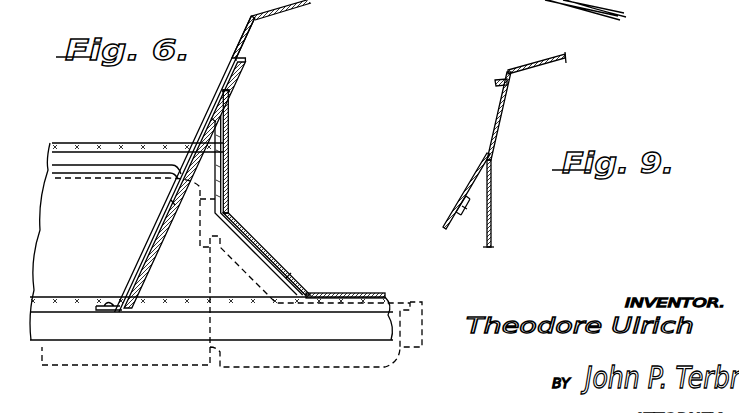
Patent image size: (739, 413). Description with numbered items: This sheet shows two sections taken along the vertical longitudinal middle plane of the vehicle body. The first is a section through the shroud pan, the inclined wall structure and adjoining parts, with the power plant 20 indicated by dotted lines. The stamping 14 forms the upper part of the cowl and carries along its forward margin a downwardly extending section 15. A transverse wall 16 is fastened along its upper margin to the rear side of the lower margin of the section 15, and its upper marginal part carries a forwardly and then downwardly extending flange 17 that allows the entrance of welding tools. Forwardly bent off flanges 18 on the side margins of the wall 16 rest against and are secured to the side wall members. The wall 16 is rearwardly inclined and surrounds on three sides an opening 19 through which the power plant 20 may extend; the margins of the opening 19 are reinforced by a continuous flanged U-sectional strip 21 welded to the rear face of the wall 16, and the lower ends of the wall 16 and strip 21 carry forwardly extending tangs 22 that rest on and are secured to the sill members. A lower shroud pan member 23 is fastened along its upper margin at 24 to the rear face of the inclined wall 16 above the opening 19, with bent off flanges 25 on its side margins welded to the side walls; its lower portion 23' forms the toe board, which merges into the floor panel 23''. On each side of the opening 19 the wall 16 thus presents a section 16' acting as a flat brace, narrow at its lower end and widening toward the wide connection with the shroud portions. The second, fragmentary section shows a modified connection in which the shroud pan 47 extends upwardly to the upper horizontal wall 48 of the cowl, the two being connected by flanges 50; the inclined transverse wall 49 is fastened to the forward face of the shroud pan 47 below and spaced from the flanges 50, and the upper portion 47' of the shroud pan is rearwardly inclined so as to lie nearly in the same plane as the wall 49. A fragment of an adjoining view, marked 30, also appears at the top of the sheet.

In FIG. 6, the stamping 14 is at (278, 10).
In FIG. 6, the downwardly extending section 15 is at (240, 50).
In FIG. 6, the transverse wall 16 is at (211, 185).
In FIG. 6, the flange 17 is at (243, 60).
In FIG. 6, the forwardly bent off flanges 18 is at (213, 97).
In FIG. 6, the opening 19 is at (226, 146).
In FIG. 6, the power plant 20 is at (214, 199).
In FIG. 6, the flanged U-sectional strip 21 is at (214, 119).
In FIG. 6, the tangs 22 is at (117, 305).
In FIG. 6, the lower shroud pan member 23 is at (259, 192).
In FIG. 6, the lower portion of the shroud pan member 23' is at (306, 269).
In FIG. 6, the floor panel 23'' is at (345, 281).
In FIG. 6, the fastening point 24 is at (232, 94).
In FIG. 6, the bent off flanges 25 is at (258, 238).
In FIG. 6, the section 16' is at (144, 205).
In FIG. 9, the shroud pan 47 is at (507, 203).
In FIG. 9, the upper portion of the shroud pan 47' is at (517, 116).
In FIG. 9, the upper horizontal wall 48 is at (545, 63).
In FIG. 9, the inclined transverse wall 49 is at (476, 174).
In FIG. 9, the flanges 50 is at (495, 82).
In FIG. 9, the frame member 30 is at (483, 0).